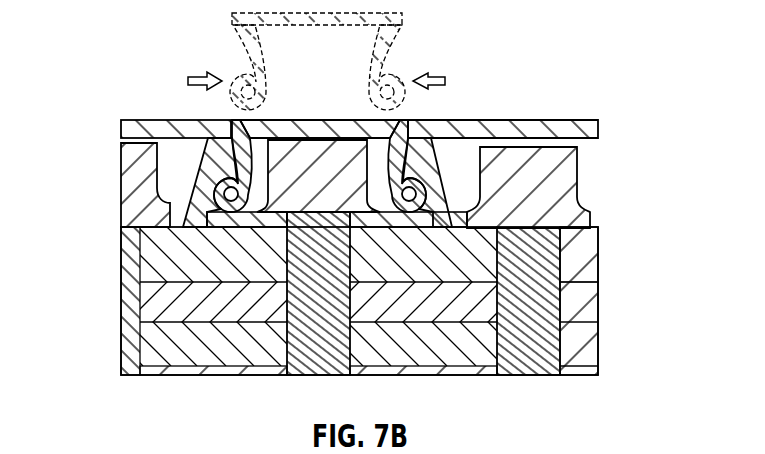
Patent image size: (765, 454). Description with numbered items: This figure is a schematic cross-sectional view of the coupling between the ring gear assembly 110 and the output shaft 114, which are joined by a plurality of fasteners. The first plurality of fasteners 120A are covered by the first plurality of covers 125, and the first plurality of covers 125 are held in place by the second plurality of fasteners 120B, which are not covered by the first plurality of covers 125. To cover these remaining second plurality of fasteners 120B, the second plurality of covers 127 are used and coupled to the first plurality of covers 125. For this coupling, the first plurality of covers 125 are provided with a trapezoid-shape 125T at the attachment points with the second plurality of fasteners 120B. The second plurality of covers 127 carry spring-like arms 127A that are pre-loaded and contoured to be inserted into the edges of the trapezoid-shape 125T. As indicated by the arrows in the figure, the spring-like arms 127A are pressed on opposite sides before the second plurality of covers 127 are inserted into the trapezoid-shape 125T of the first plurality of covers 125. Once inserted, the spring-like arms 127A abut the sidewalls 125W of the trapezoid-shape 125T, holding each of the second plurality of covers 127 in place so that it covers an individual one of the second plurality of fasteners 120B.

The ring gear assembly 110 is at (590, 298).
The output shaft 114 is at (591, 250).
The first plurality of fasteners 120A is at (552, 160).
The second plurality of fasteners 120B is at (307, 143).
The first plurality of covers 125 is at (147, 128).
The trapezoid-shape 125T is at (207, 165).
The sidewalls 125W is at (427, 178).
The second plurality of covers 127 is at (285, 120).
The spring-like arms 127A is at (233, 47).